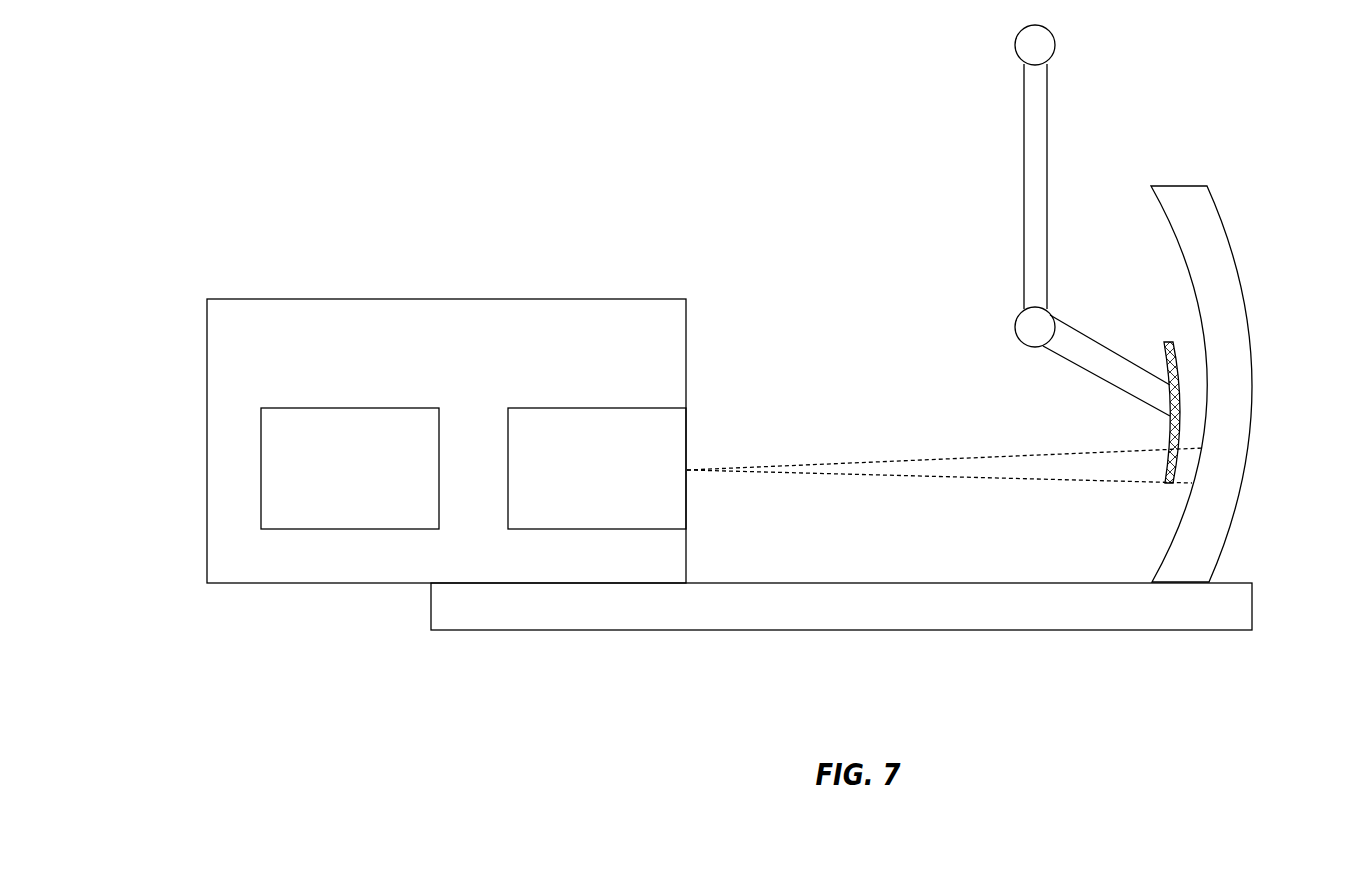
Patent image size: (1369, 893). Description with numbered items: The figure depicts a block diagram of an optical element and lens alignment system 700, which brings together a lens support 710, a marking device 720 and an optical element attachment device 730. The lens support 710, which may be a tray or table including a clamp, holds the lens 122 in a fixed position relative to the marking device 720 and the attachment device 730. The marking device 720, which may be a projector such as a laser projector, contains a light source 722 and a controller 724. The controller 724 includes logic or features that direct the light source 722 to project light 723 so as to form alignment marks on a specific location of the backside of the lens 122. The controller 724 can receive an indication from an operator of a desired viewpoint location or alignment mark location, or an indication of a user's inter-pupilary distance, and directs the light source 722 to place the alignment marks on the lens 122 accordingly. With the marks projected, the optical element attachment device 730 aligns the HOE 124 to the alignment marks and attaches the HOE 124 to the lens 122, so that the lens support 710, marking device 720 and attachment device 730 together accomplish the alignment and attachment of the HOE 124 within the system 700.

The optical element and lens alignment system 700 is at (355, 162).
The marking device 720 is at (428, 376).
The controller 724 is at (331, 486).
The light source 722 is at (579, 486).
The light 723 is at (870, 442).
The lens support 710 is at (925, 618).
The optical element attachment device 730 is at (990, 245).
The HOE 124 is at (1167, 370).
The lens 122 is at (1250, 333).